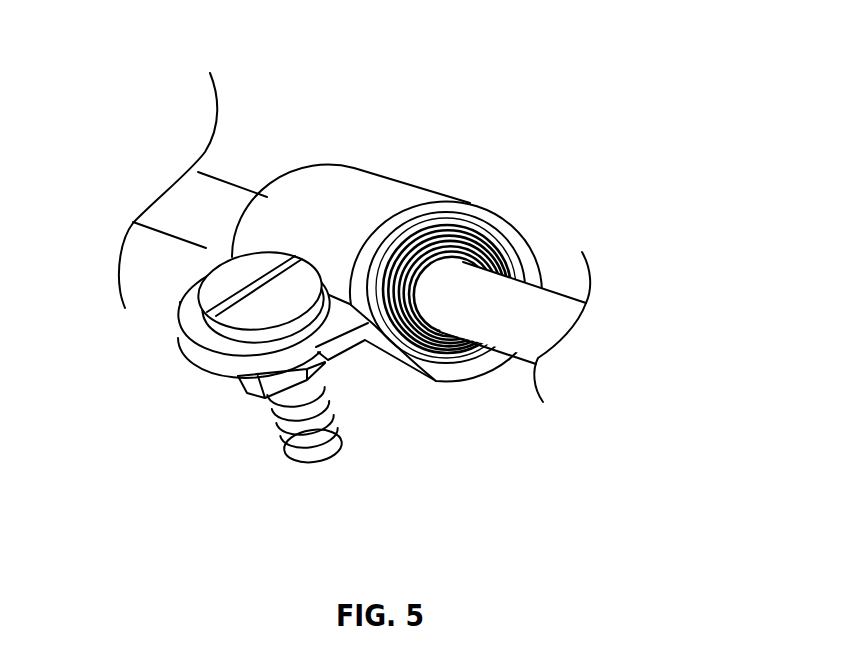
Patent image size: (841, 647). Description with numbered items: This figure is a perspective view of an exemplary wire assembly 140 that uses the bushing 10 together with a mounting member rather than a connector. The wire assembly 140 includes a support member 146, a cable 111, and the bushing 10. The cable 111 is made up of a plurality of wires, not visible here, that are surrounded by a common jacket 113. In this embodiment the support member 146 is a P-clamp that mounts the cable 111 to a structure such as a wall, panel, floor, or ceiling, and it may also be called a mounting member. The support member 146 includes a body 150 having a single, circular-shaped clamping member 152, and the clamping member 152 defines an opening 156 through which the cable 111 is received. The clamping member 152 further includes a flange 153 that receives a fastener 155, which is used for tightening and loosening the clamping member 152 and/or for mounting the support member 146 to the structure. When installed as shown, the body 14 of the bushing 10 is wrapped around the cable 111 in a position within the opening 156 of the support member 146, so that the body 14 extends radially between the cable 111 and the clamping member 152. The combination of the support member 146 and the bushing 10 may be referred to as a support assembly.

The wire assembly 140 is at (648, 49).
The support member 146 is at (323, 146).
The bushing 10 is at (413, 206).
The clamping member 152 is at (465, 205).
The opening 156 is at (498, 240).
The body 14 is at (452, 348).
The cable 111 is at (554, 281).
The jacket 113 is at (538, 308).
The flange 153 is at (170, 298).
The fastener 155 is at (278, 423).
The body 150 is at (355, 383).